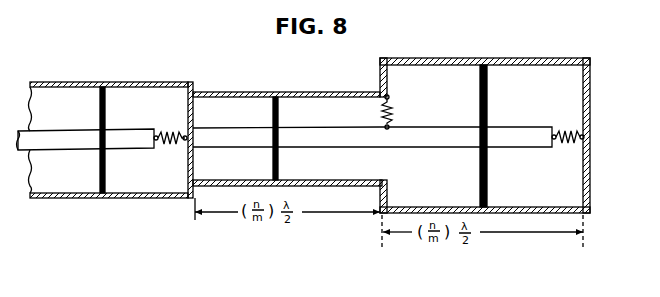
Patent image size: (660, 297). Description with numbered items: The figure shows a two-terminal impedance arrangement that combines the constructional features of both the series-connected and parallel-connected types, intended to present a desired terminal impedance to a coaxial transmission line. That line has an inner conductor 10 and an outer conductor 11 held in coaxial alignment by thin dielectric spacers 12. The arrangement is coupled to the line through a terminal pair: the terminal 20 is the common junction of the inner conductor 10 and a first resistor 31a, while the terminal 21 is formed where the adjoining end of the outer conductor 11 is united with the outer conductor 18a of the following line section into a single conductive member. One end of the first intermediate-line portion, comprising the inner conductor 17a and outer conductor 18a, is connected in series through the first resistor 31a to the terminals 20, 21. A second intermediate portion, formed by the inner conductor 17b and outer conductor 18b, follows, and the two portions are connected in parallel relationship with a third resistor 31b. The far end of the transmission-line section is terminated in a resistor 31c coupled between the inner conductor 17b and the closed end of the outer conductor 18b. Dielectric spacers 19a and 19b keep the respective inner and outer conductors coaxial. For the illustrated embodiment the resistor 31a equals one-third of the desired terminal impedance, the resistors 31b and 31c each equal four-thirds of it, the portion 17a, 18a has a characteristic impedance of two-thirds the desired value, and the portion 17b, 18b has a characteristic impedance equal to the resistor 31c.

The inner conductor 10 is at (80, 150).
The outer conductor 11 is at (60, 82).
The dielectric spacers 12 is at (102, 109).
The terminal 20 is at (157, 141).
The terminal 21 is at (195, 93).
The first resistor 31a is at (164, 127).
The third resistor 31b is at (392, 121).
The resistor 31c is at (567, 127).
The outer conductor of intermediate-line portion 18a is at (363, 92).
The outer conductor of intermediate-line portion 18b is at (512, 58).
The dielectric spacer 19a is at (273, 114).
The dielectric spacer 19b is at (487, 88).
The inner conductor of intermediate-line portion 17a is at (344, 147).
The inner conductor of intermediate-line portion 17b is at (441, 147).